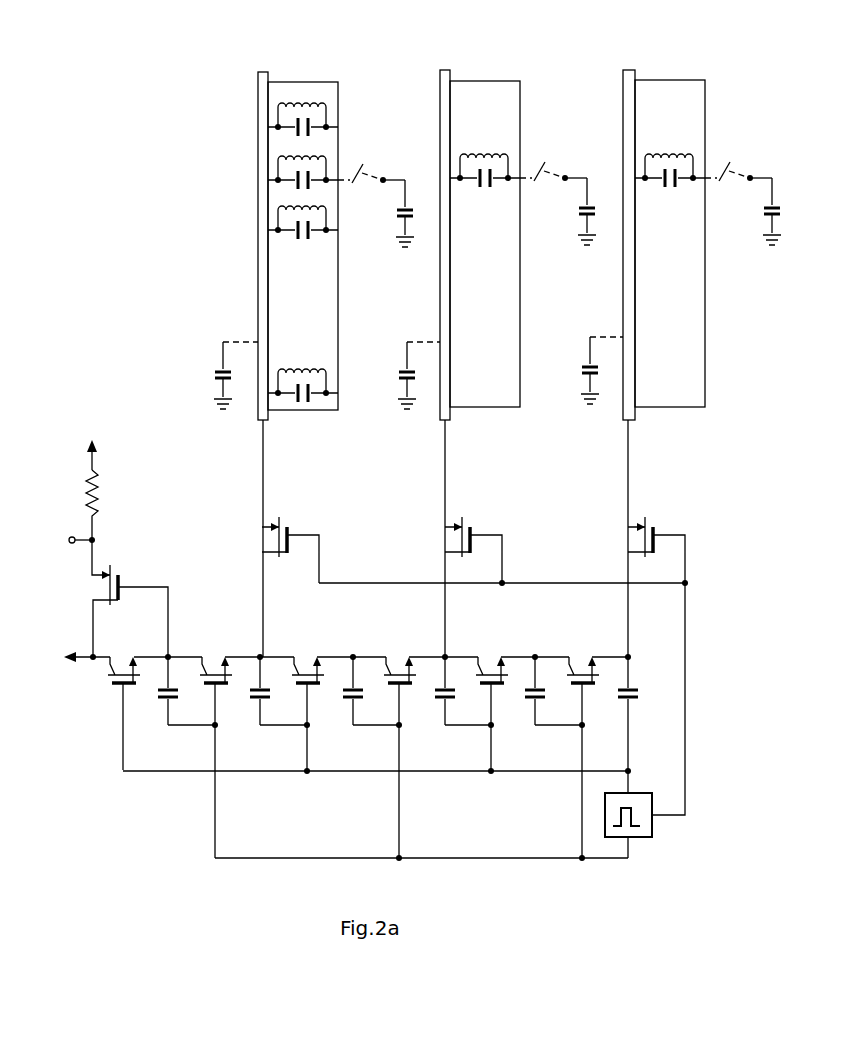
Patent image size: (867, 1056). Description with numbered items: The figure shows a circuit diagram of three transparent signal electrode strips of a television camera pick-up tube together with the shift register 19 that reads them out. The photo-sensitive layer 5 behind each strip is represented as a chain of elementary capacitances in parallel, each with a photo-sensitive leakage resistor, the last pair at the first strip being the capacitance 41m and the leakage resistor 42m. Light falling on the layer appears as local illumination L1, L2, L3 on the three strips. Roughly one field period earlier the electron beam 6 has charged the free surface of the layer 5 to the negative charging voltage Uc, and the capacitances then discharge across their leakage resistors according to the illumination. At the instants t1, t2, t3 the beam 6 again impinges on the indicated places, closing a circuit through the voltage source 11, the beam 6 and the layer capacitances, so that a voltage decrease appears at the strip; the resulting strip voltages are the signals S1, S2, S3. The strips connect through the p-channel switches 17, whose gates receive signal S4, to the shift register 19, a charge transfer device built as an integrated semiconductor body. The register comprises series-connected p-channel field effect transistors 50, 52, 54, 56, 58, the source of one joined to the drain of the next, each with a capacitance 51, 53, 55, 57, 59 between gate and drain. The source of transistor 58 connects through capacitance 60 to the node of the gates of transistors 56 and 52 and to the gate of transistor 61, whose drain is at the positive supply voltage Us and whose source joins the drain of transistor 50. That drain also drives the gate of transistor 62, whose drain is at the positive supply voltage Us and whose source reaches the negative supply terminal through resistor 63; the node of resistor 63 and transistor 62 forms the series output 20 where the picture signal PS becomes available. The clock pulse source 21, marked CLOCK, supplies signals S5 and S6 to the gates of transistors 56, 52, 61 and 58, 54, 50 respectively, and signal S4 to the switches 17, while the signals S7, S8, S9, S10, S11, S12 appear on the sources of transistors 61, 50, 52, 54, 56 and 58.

The photo-sensitive layer 5 is at (318, 80).
The electron beam 6 is at (376, 178).
The voltage source 11 is at (405, 213).
The capacitance 41m is at (307, 405).
The photo-sensitive leakage resistor 42m is at (318, 374).
The local illumination L1 is at (292, 150).
The local illumination L2 is at (470, 148).
The local illumination L3 is at (655, 148).
The instant t1 is at (347, 181).
The instant t2 is at (529, 179).
The instant t3 is at (714, 179).
The voltage Uc is at (598, 181).
The supply voltage Us is at (87, 554).
The switches 17 is at (727, 549).
The shift register 19 is at (160, 818).
The series output 20 is at (73, 538).
The picture signal PS is at (74, 561).
The clock pulse source 21 is at (642, 808).
The clock CLOCK is at (680, 783).
The field effect transistor 50 is at (206, 682).
The capacitance 51 is at (164, 700).
The field effect transistor 52 is at (298, 682).
The capacitance 53 is at (257, 700).
The field effect transistor 54 is at (390, 682).
The capacitance 55 is at (349, 700).
The field effect transistor 56 is at (482, 682).
The capacitance 57 is at (442, 700).
The field effect transistor 58 is at (573, 682).
The capacitance 59 is at (532, 700).
The capacitance 60 is at (622, 700).
The p-channel transistor 61 is at (110, 682).
The p-channel transistor 62 is at (114, 576).
The resistor 63 is at (78, 494).
The signal S1 is at (262, 476).
The signal S2 is at (444, 476).
The signal S3 is at (627, 476).
The signal S4 is at (522, 697).
The signal S5 is at (393, 756).
The signal S6 is at (439, 855).
The signal S7 is at (170, 655).
The signal S8 is at (263, 655).
The signal S9 is at (353, 655).
The signal S10 is at (447, 655).
The signal S11 is at (537, 655).
The signal S12 is at (630, 655).